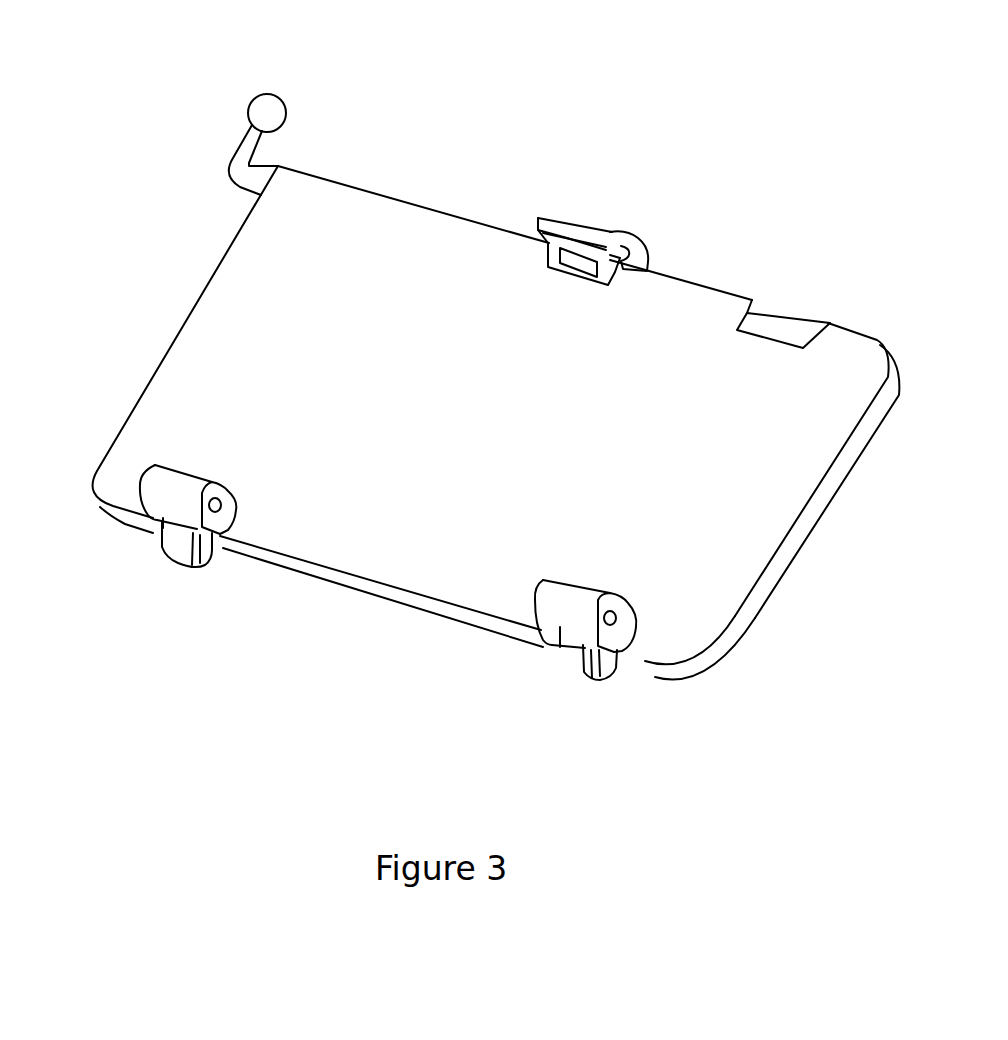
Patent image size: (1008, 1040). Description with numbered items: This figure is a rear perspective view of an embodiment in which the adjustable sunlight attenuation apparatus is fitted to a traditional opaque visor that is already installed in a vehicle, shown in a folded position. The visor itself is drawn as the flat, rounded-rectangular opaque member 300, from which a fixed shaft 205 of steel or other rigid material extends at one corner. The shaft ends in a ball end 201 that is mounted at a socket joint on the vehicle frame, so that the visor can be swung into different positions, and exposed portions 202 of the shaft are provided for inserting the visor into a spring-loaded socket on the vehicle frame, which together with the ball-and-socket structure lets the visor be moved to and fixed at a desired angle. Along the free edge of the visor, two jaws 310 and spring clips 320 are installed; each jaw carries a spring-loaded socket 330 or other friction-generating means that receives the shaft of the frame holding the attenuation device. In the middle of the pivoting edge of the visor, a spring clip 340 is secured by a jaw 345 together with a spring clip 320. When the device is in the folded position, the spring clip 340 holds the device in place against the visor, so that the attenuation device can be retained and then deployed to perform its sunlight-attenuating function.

The ball end 201 is at (252, 97).
The fixed shaft 205 is at (267, 167).
The cover frame 300 is at (240, 305).
The spring clip 340 is at (560, 217).
The spring clip 320 is at (623, 230).
The jaw 345 is at (648, 247).
The exposed portion of the shaft 202 is at (798, 320).
The spring-loaded socket 330 is at (222, 507).
The jaw 310 is at (567, 650).